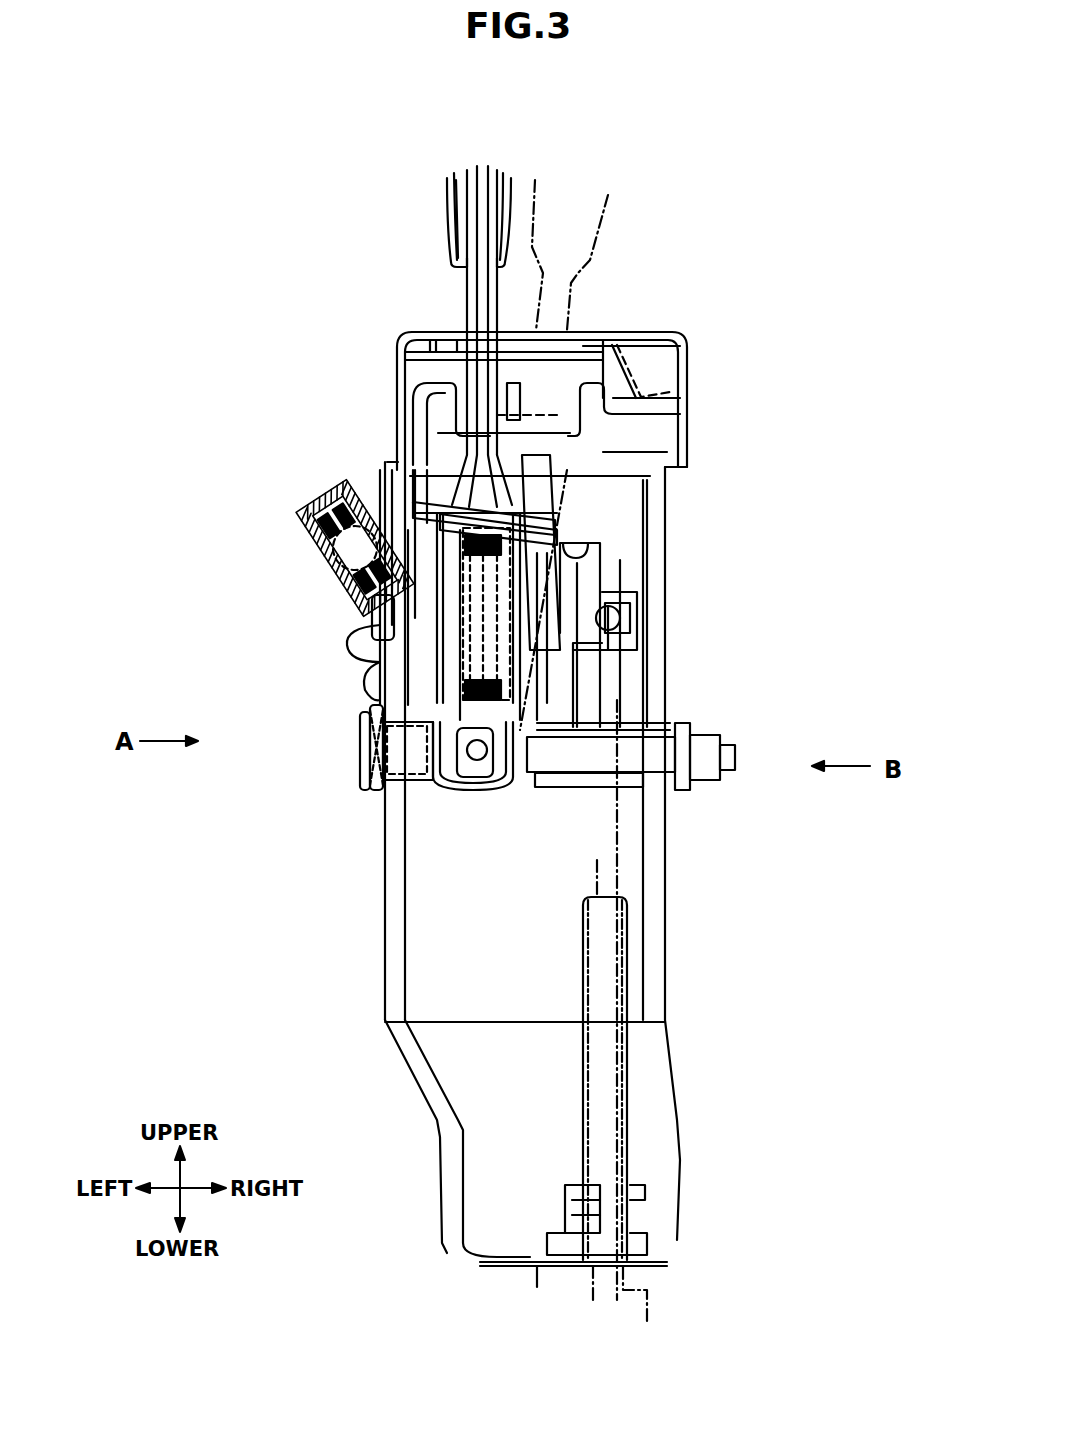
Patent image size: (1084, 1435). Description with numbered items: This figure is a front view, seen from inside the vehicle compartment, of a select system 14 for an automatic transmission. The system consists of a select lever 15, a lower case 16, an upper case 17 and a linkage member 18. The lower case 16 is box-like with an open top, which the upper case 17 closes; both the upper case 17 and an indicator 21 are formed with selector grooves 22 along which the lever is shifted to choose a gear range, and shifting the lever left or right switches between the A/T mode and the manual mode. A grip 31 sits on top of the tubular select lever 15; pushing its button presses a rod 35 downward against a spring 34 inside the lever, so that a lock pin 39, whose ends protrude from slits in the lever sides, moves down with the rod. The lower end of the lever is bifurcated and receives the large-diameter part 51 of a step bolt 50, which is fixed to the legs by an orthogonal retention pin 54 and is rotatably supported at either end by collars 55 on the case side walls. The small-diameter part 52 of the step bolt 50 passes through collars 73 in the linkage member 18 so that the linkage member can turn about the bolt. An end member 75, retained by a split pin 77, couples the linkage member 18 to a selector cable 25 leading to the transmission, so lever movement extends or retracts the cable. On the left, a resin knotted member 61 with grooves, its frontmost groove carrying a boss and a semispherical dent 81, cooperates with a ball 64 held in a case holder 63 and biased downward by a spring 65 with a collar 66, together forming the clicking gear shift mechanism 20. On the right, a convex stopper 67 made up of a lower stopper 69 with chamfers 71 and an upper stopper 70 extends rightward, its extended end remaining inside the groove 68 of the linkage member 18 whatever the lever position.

The select system 14 is at (738, 200).
The select lever 15 is at (543, 160).
The lower case 16 is at (385, 962).
The upper case 17 is at (398, 430).
The linkage member 18 is at (637, 500).
The clicking gear shift mechanism 20 is at (198, 500).
The indicator 21 is at (405, 335).
The selector grooves 22 is at (552, 392).
The selector cable 25 is at (607, 1077).
The grip 31 is at (448, 190).
The spring 34 is at (372, 722).
The rod 35 is at (460, 238).
The lock pin 39 is at (455, 528).
The step bolt 50 is at (366, 785).
The large-diameter part 51 is at (435, 773).
The small-diameter part 52 is at (570, 762).
The retention pin 54 is at (477, 773).
The collars 55 is at (393, 790).
The knotted member 61 is at (372, 653).
The case holder 63 is at (307, 508).
The ball 64 is at (363, 620).
The spring 65 is at (342, 558).
The collar 66 is at (350, 597).
The stopper 67 is at (738, 545).
The groove 68 is at (603, 557).
The lower stopper 69 is at (622, 620).
The upper stopper 70 is at (600, 587).
The chamfers 71 is at (580, 600).
The collars 73 is at (647, 728).
The end member 75 is at (637, 650).
The split pin 77 is at (625, 626).
The semispherical dent 81 is at (370, 628).